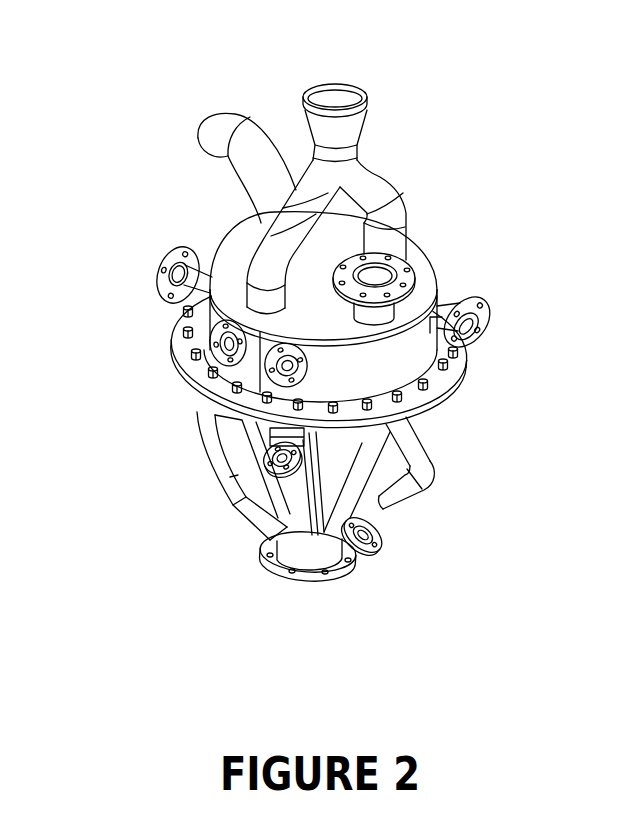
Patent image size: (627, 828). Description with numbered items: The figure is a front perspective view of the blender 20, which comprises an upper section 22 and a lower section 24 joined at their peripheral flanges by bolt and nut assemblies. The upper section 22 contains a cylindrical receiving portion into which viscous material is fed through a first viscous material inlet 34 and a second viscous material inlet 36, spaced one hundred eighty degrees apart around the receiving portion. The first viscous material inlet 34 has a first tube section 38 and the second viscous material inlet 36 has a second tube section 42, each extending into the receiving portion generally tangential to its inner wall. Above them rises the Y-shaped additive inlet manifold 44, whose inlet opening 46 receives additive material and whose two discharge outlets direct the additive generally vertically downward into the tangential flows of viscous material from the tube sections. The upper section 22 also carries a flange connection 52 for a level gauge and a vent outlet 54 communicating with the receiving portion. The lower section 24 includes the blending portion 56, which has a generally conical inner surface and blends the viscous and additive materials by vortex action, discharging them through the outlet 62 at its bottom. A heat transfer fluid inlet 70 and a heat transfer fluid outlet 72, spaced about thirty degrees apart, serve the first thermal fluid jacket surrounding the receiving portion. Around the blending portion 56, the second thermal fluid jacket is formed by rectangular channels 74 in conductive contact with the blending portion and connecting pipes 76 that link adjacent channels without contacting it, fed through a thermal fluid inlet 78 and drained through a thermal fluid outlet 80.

The blender 20 is at (459, 109).
The upper section 22 is at (450, 275).
The lower section 24 is at (198, 483).
The first viscous material inlet 34 is at (493, 334).
The second viscous material inlet 36 is at (157, 261).
The first tube section 38 is at (446, 310).
The second tube section 42 is at (192, 284).
The Y-shaped additive inlet manifold 44 is at (370, 159).
The inlet opening 46 is at (347, 81).
The flange connection 52 is at (419, 271).
The vent outlet 54 is at (234, 108).
The blending portion 56 is at (412, 427).
The outlet 62 is at (288, 587).
The heat transfer fluid inlet 70 is at (299, 365).
The heat transfer fluid outlet 72 is at (221, 348).
The rectangular channels 74 is at (236, 427).
The connecting pipes 76 is at (203, 461).
The thermal fluid inlet 78 is at (372, 542).
The thermal fluid outlet 80 is at (280, 468).